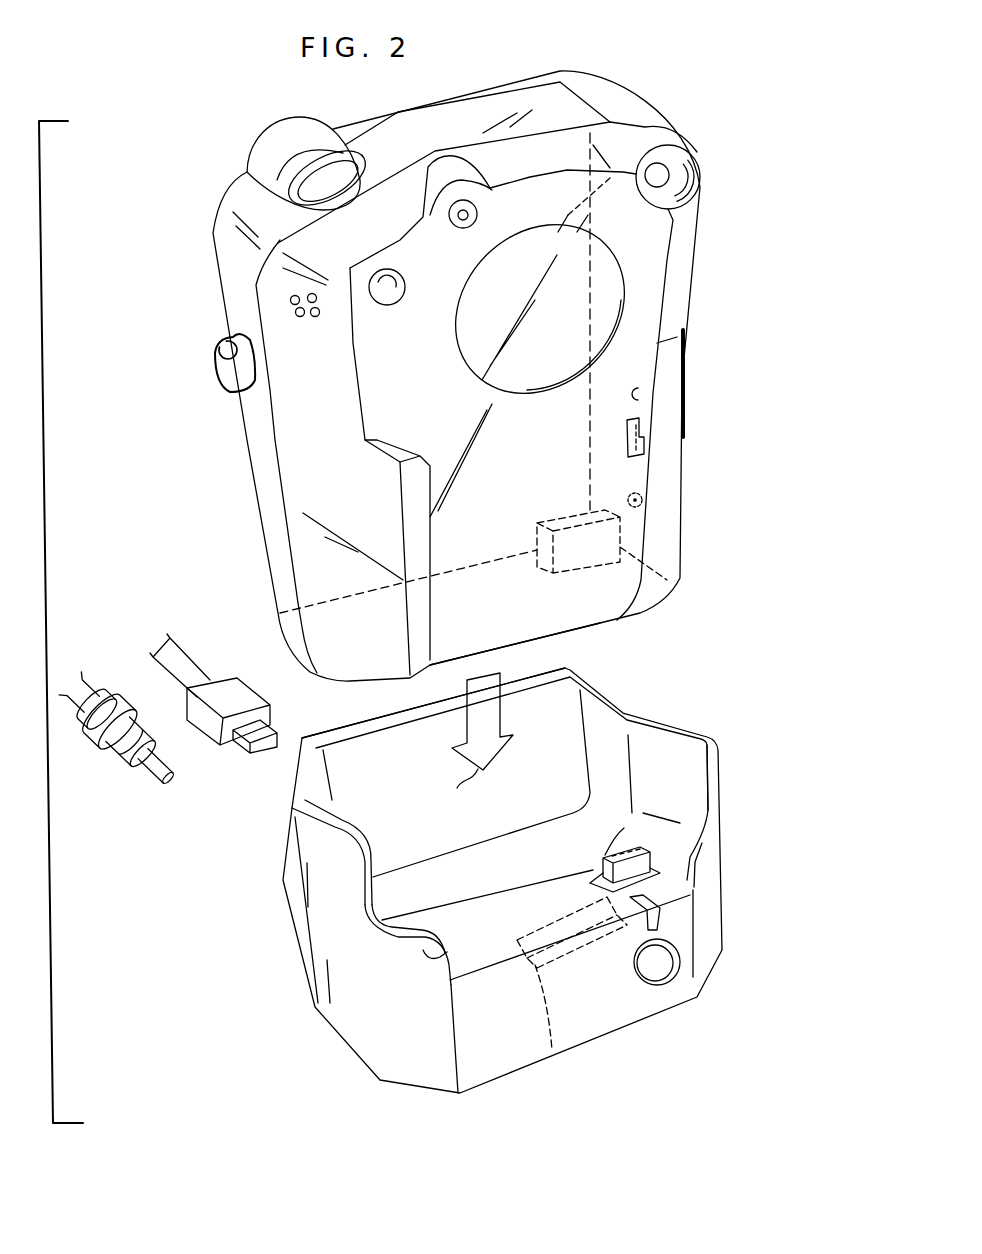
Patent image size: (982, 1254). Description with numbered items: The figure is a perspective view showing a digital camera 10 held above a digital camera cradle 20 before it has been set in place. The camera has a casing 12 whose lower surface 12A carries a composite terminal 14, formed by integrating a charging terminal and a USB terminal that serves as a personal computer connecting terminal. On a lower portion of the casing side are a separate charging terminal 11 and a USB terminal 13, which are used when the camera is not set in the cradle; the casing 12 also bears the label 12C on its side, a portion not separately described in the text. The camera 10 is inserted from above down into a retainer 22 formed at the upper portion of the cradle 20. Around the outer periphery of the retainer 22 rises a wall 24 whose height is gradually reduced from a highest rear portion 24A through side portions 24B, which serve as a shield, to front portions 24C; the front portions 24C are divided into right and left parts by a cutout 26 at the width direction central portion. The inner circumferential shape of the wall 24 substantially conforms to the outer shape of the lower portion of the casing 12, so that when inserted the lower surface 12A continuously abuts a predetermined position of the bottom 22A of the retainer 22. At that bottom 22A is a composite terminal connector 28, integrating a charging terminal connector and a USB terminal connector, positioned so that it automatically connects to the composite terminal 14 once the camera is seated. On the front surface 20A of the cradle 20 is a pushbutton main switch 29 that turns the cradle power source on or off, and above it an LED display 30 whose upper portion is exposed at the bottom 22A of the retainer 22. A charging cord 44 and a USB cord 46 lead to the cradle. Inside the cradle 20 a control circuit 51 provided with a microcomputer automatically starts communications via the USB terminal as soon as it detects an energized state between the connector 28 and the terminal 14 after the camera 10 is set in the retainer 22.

The digital camera 10 is at (473, 84).
The charging terminal 11 is at (643, 503).
The casing 12 is at (290, 500).
The lower surface 12A is at (597, 610).
The side surface of housing 12C is at (637, 373).
The USB terminal 13 is at (643, 445).
The composite terminal 14 is at (625, 545).
The digital camera cradle 20 is at (722, 770).
The front surface 20A is at (637, 1003).
The retainer 22 is at (540, 748).
The bottom 22A is at (583, 907).
The wall 24 is at (683, 722).
The highest rear portion 24A is at (345, 763).
The side portions 24B is at (688, 745).
The front portions 24C is at (712, 850).
The cutout 26 is at (455, 962).
The composite terminal connector 28 is at (603, 862).
The main switch 29 is at (663, 967).
The display 30 is at (655, 915).
The charging cord 44 is at (106, 747).
The USB cord 46 is at (238, 690).
The control circuit 51 is at (552, 1050).